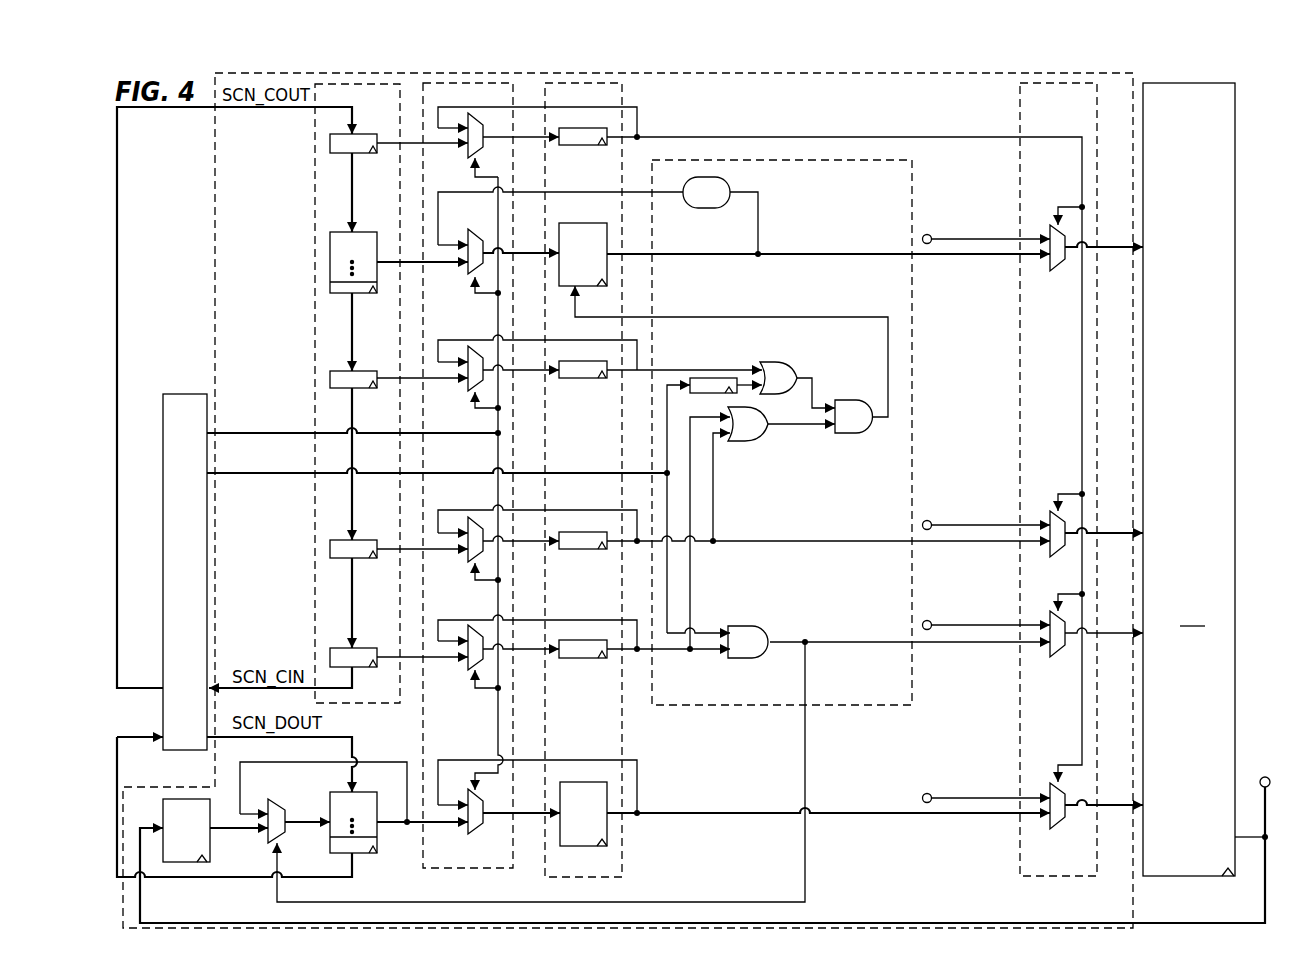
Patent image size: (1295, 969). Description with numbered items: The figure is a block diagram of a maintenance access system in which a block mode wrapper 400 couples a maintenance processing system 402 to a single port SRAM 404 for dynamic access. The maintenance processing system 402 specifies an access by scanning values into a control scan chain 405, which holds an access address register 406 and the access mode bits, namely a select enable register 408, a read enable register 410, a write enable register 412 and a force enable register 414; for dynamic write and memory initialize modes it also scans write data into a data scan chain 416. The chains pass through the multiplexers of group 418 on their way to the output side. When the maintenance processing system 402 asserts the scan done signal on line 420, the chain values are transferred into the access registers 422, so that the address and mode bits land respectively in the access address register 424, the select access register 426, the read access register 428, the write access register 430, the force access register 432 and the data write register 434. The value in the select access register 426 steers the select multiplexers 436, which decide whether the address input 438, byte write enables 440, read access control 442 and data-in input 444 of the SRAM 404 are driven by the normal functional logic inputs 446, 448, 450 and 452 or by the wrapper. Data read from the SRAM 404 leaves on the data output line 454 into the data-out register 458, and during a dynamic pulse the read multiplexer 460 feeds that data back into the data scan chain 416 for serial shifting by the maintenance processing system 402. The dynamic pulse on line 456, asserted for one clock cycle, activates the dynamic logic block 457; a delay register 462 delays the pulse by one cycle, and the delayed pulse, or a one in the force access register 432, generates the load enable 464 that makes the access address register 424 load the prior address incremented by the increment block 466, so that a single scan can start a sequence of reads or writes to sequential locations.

The block mode wrapper 400 is at (215, 210).
The maintenance processing system 402 is at (188, 394).
The SRAM 404 is at (1176, 878).
The control scan chain 405 is at (352, 705).
The access address register 406 is at (360, 232).
The select enable register 408 is at (360, 134).
The read enable register 410 is at (360, 648).
The write enable register 412 is at (360, 540).
The force enable register 414 is at (360, 371).
The data scan chain 416 is at (362, 855).
The STEP multiplexers 418 is at (445, 870).
The scan done signal line 420 is at (222, 432).
The access registers 422 is at (622, 830).
The access address register 424 is at (561, 223).
The select access register 426 is at (577, 145).
The read access register 428 is at (572, 658).
The write access register 430 is at (572, 549).
The force access register 432 is at (572, 378).
The data write register 434 is at (566, 846).
The select multiplexers 436 is at (1056, 878).
The address input 438 is at (1104, 247).
The byte write enables 440 is at (1104, 533).
The read access control 442 is at (1104, 633).
The data-in input 444 is at (1104, 805).
The address input from functional logic 446 is at (926, 234).
The byte write enable input from functional logic 448 is at (926, 520).
The read access control input from functional logic 450 is at (926, 620).
The data-in input from functional logic 452 is at (926, 793).
The SRAM data output 454 is at (905, 921).
The dynamic pulse line 456 is at (230, 476).
The dynamic logic block 457 is at (696, 707).
The data-out register 458 is at (211, 846).
The read multiplexer 460 is at (277, 799).
The delay register 462 is at (700, 378).
The load enable 464 is at (905, 317).
The increment block 466 is at (706, 208).